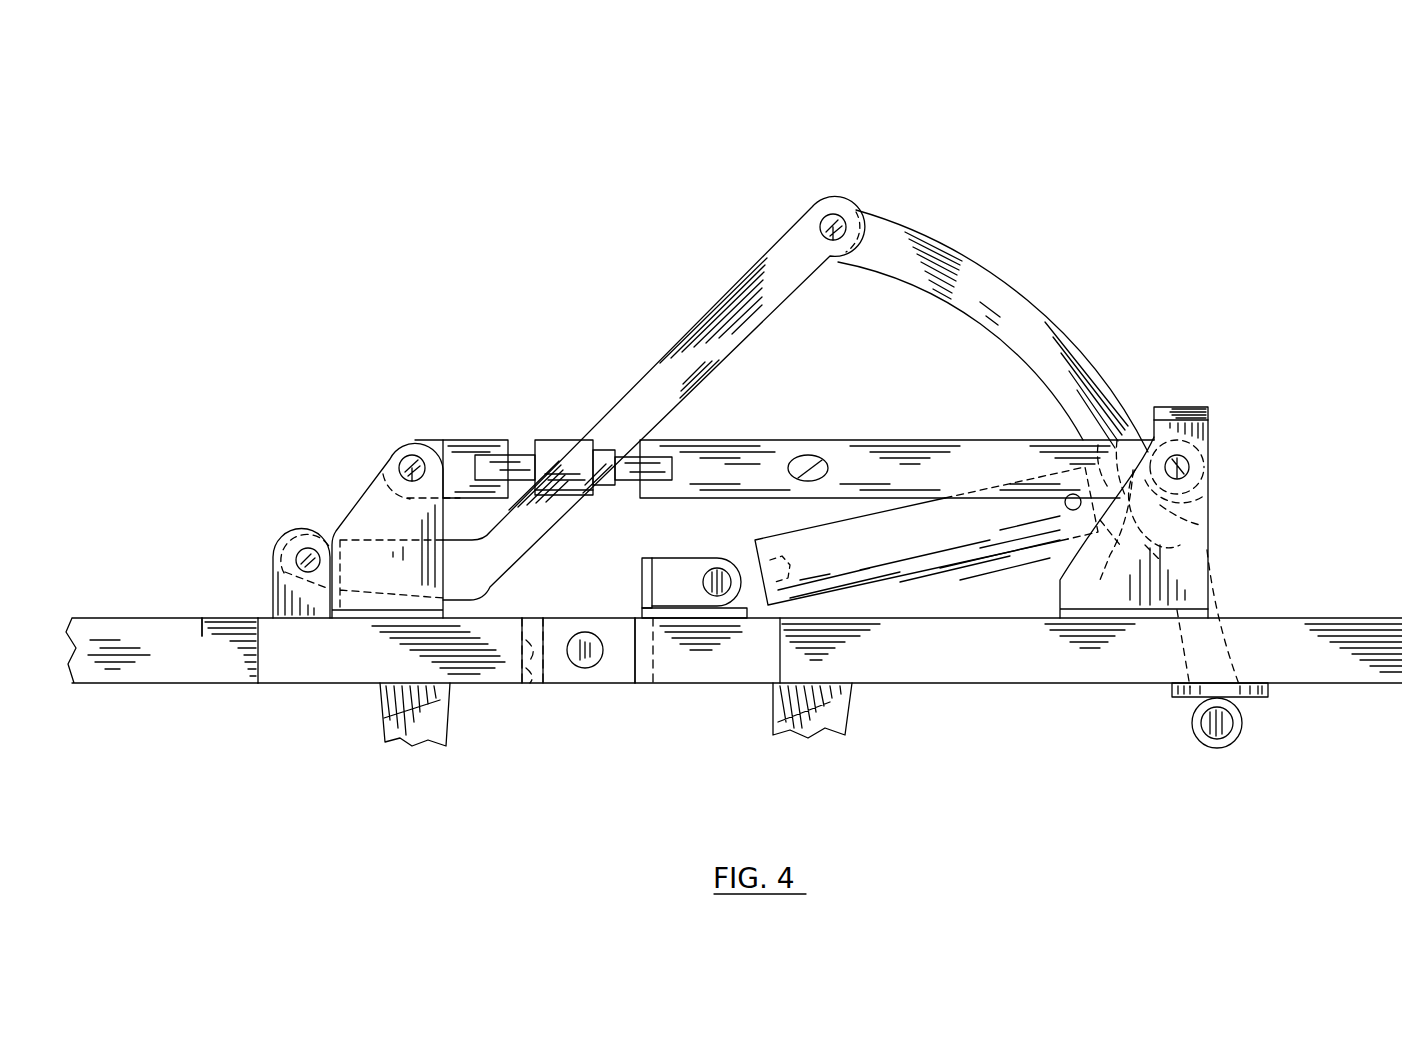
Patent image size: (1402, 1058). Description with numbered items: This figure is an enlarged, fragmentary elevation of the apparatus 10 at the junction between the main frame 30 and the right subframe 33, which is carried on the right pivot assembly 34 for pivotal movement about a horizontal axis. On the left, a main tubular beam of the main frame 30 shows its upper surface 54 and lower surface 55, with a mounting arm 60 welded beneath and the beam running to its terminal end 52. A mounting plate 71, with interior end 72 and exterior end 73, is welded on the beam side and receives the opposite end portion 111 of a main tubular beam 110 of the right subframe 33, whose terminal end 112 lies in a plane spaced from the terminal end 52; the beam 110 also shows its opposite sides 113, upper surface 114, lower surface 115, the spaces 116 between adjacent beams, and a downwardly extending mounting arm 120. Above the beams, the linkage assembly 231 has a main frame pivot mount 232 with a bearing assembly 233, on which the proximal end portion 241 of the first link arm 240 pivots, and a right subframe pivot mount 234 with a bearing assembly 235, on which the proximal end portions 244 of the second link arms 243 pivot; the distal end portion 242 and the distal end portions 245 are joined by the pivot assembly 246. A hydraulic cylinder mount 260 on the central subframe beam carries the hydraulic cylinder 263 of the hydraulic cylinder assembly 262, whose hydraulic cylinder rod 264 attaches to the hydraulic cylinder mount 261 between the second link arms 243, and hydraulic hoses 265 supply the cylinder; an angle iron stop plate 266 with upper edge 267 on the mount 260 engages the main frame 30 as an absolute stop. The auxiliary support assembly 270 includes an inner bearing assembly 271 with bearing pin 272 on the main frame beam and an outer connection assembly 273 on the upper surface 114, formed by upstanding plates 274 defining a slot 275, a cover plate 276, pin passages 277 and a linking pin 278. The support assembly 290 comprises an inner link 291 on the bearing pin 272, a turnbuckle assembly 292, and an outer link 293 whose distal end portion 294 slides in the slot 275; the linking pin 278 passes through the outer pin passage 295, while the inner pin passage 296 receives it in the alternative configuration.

The clamping apparatus 10 is at (948, 190).
The main frame 30 is at (203, 618).
The right subframe 33 is at (1345, 632).
The right pivot assembly 34 is at (585, 668).
The terminal ends 52 is at (522, 690).
The upper surface 54 is at (128, 617).
The lower surface 55 is at (142, 685).
The mounting arms 60 is at (393, 735).
The mounting plates 71 is at (337, 650).
The interior ends 72 is at (250, 652).
The exterior ends 73 is at (636, 658).
The main tubular beams 110 is at (1345, 660).
The opposite end portions 111 is at (740, 652).
The terminal ends 112 is at (537, 620).
The opposite sides 113 is at (989, 656).
The upper surface 114 is at (925, 618).
The lower surface 115 is at (955, 685).
The spaces 116 is at (1150, 683).
The mounting arms 120 is at (808, 722).
The linkage assembly 231 is at (714, 272).
The main frame pivot mount 232 is at (282, 537).
The bearing assembly 233 is at (309, 547).
The right subframe pivot mount 234 is at (1205, 747).
The bearing assembly 235 is at (1226, 738).
The first link arm 240 is at (640, 400).
The proximal end portion 241 is at (344, 493).
The distal end portion 242 is at (805, 220).
The second link arms 243 is at (1030, 312).
The proximal end portions 244 is at (1237, 647).
The distal end portions 245 is at (895, 208).
The pivot assembly 246 is at (832, 240).
The hydraulic cylinder mount 260 is at (687, 585).
The hydraulic cylinder mount 261 is at (1120, 560).
The hydraulic cylinder assembly 262 is at (883, 512).
The hydraulic cylinder 263 is at (914, 549).
The hydraulic cylinder rod 264 is at (1062, 428).
The hydraulic hoses 265 is at (768, 545).
The angle iron stop plate 266 is at (642, 610).
The upper edge 267 is at (642, 566).
The auxiliary support assembly 270 is at (455, 418).
The inner bearing assembly 271 is at (380, 465).
The bearing pin 272 is at (411, 485).
The outer connection assembly 273 is at (1210, 421).
The upstanding plates 274 is at (1208, 488).
The slot 275 is at (1210, 437).
The cover plate 276 is at (1172, 407).
The pin passages 277 is at (1188, 466).
The linking pin 278 is at (1118, 405).
The support assembly 290 is at (990, 436).
The inner link 291 is at (463, 482).
The turnbuckle assembly 292 is at (575, 455).
The outer link 293 is at (735, 452).
The distal end portion 294 is at (1205, 525).
The outer pin passage 295 is at (1150, 540).
The inner pin passage 296 is at (828, 468).